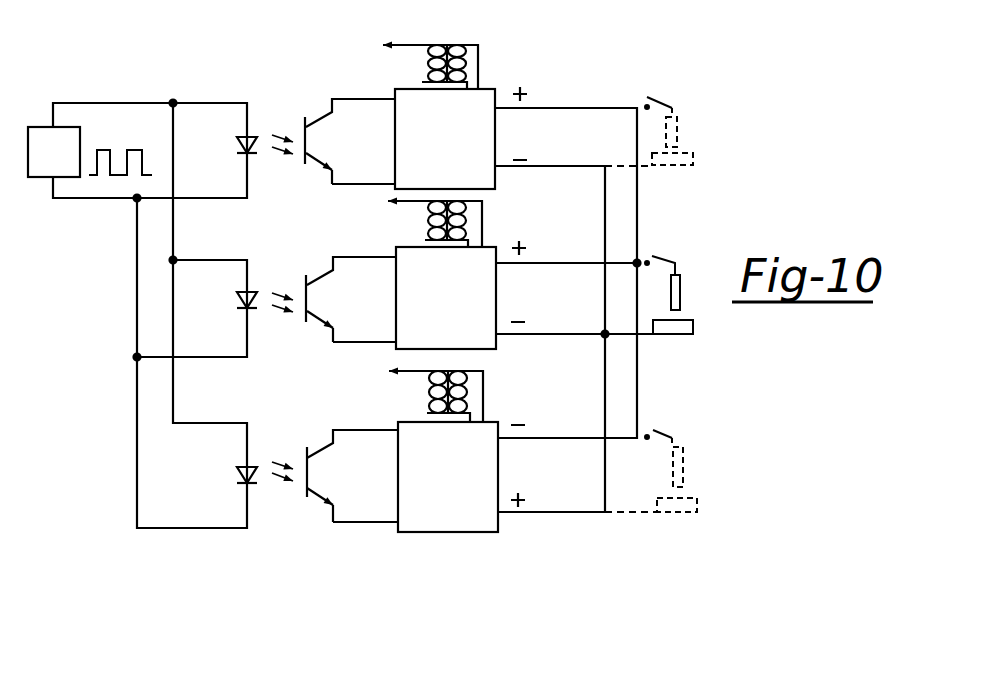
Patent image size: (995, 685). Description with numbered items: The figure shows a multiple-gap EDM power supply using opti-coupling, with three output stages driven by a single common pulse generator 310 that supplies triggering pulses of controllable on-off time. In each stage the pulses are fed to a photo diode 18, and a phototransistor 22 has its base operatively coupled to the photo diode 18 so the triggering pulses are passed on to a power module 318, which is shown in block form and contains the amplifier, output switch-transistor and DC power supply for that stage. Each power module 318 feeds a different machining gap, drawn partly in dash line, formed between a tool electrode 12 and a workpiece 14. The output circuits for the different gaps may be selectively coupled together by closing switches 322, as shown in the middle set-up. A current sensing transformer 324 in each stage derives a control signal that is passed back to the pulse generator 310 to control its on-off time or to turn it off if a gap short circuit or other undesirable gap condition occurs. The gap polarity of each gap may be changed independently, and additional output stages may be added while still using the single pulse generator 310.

The pulse generator 310 is at (45, 178).
The photo diode 18 is at (237, 146).
The phototransistor 22 is at (323, 136).
The power module 318 is at (483, 146).
The current sensing transformer 324 is at (462, 32).
The switch 322 is at (648, 97).
The tool electrode 12 is at (677, 130).
The workpiece 14 is at (693, 166).